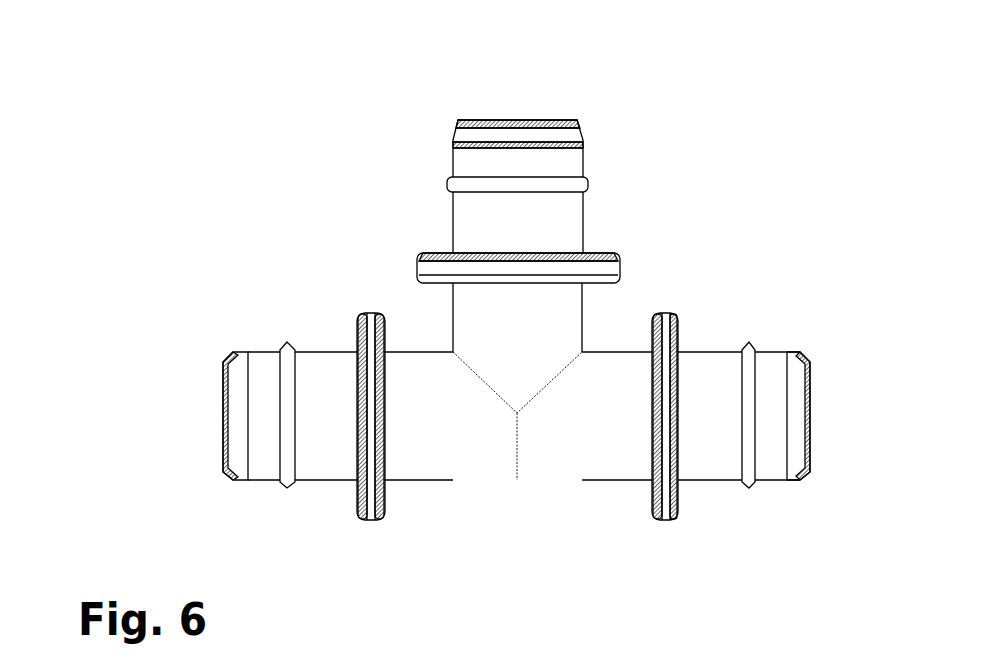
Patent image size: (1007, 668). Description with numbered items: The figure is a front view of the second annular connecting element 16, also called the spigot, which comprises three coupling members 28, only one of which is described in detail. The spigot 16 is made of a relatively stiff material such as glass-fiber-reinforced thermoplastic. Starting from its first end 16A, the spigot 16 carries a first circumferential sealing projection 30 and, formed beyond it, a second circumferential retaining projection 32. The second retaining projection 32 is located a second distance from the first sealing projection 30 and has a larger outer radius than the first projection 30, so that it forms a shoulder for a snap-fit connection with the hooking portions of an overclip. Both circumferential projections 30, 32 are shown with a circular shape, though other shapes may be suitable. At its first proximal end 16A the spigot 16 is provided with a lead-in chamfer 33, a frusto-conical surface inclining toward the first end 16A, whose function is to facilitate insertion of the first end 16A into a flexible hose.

The second annular connecting element 16 is at (205, 121).
The first end 16A is at (513, 123).
The lead in chamfer 33 is at (557, 137).
The first circumferential sealing projection 30 is at (448, 192).
The second circumferential retaining projection 32 is at (447, 278).
The coupling member 28 is at (555, 230).